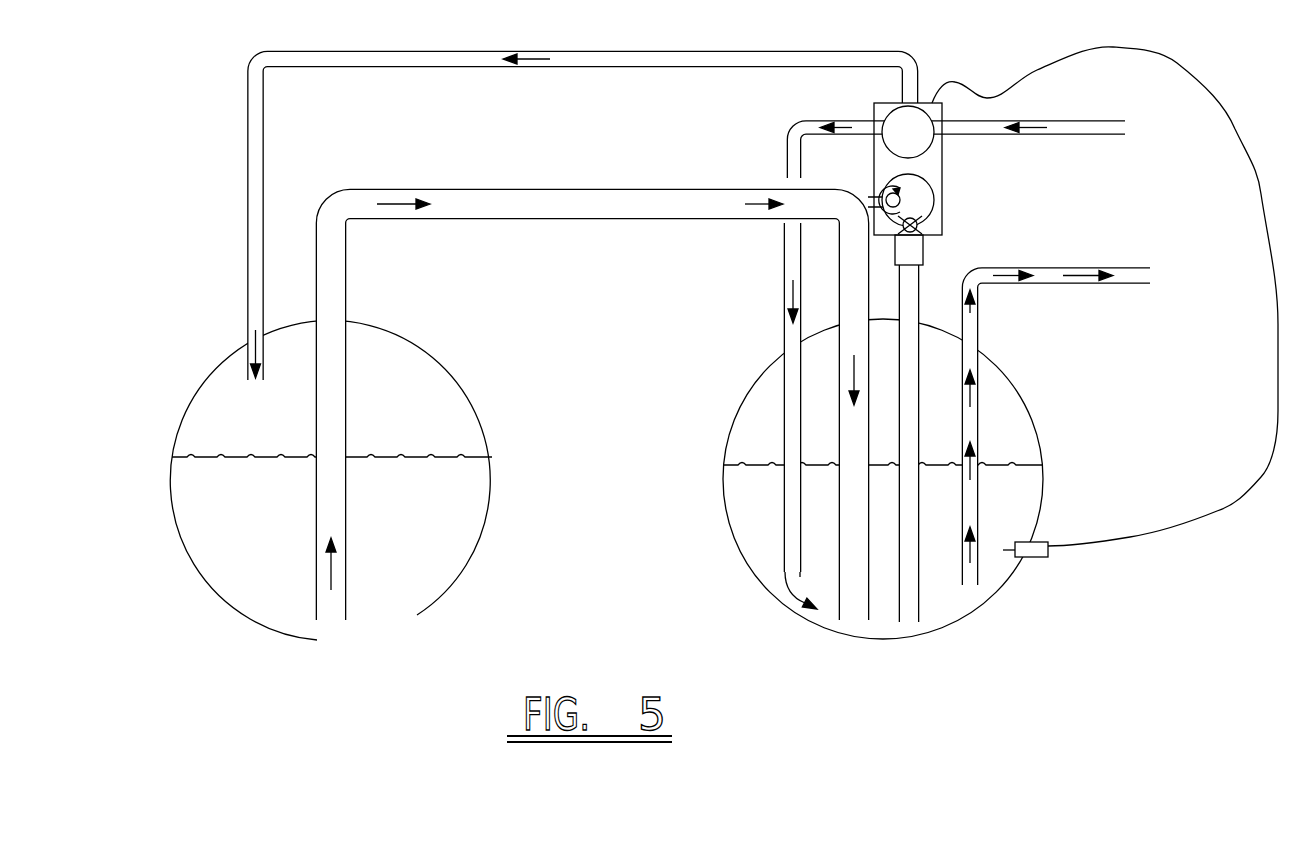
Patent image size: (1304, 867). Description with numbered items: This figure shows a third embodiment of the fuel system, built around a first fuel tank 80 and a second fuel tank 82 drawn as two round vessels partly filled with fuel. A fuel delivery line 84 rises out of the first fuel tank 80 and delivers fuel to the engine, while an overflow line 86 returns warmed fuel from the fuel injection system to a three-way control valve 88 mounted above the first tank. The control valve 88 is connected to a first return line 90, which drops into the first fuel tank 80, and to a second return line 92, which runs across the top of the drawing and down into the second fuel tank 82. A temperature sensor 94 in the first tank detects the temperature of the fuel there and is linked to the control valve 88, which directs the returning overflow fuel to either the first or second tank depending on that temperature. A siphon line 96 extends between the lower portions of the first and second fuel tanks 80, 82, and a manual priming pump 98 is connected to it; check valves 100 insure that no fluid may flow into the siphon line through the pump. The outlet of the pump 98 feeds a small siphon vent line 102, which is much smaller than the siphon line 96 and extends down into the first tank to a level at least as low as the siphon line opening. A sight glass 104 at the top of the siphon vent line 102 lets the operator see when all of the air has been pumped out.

The first fuel tank 80 is at (1043, 437).
The second fuel tank 82 is at (483, 535).
The fuel delivery line 84 is at (977, 322).
The overflow line 86 is at (1033, 120).
The three-way control valve 88 is at (920, 102).
The first return line 90 is at (785, 297).
The second return line 92 is at (248, 258).
The temperature sensor 94 is at (1035, 557).
The siphon line 96 is at (497, 190).
The manual priming pump 98 is at (932, 187).
The check valves 100 is at (927, 222).
The siphon vent line 102 is at (918, 350).
The sight glass 104 is at (923, 250).